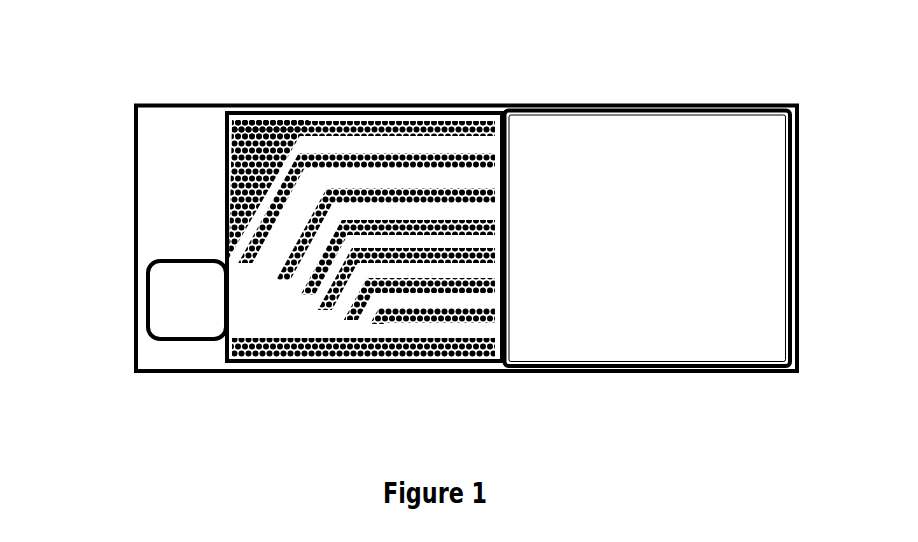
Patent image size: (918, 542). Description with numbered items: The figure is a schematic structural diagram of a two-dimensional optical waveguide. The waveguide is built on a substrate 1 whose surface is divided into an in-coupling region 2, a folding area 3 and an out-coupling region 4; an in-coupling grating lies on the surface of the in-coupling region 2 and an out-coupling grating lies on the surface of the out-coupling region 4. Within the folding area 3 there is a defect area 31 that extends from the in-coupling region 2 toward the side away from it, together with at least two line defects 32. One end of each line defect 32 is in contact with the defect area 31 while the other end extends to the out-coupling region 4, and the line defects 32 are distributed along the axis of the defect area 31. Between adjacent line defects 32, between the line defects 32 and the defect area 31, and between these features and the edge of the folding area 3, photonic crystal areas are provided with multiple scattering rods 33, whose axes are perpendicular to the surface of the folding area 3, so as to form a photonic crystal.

The substrate 1 is at (188, 125).
The in-coupling region 2 is at (173, 295).
The folding area 3 is at (282, 225).
The out-coupling region 4 is at (612, 142).
The defect area 31 is at (245, 300).
The line defect 32 is at (318, 185).
The scattering rod 33 is at (280, 355).